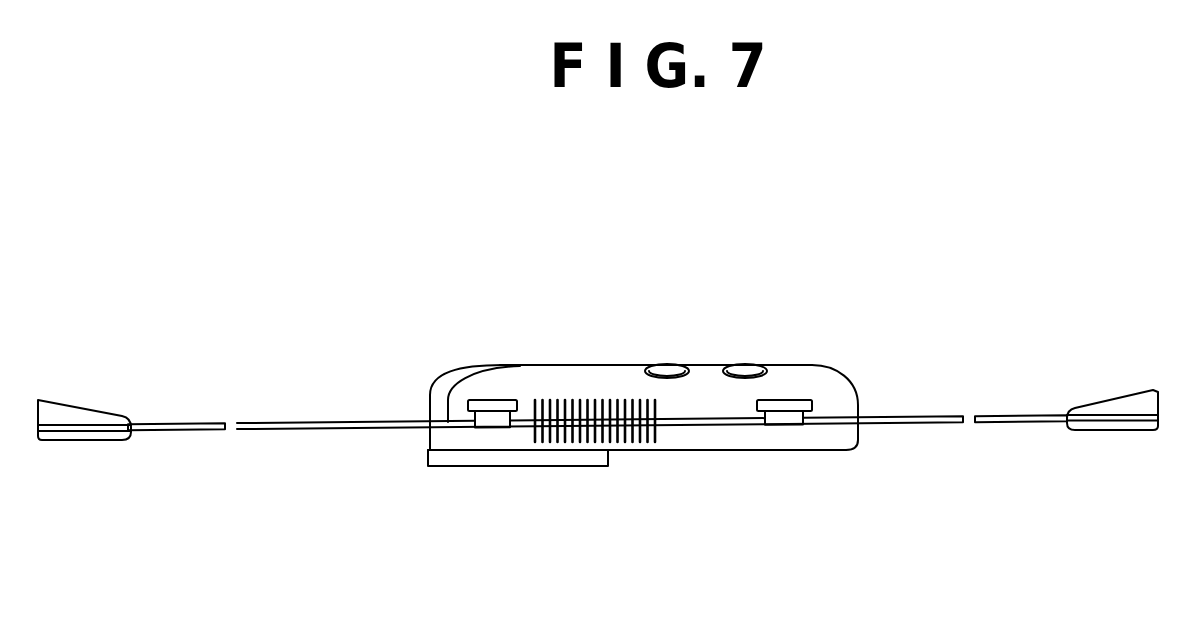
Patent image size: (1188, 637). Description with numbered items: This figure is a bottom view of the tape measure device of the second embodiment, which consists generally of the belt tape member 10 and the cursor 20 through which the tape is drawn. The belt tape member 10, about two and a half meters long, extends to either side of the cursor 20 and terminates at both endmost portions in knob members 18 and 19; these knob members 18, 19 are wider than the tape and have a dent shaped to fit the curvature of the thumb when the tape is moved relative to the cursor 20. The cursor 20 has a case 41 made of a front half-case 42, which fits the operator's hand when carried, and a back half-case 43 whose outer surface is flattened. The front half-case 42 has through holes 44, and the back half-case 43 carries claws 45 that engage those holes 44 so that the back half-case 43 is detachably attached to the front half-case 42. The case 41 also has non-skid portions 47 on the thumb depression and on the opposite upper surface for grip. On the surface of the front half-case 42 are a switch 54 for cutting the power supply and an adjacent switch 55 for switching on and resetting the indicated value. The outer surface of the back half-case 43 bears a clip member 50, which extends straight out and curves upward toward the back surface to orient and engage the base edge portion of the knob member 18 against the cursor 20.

The belt tape member 10 is at (278, 423).
The knob member 18 is at (70, 413).
The knob member 19 is at (1135, 407).
The cursor 20 is at (684, 419).
The case 41 is at (846, 449).
The front half-case 42 is at (822, 378).
The back half-case 43 is at (822, 443).
The through hole 44 is at (500, 400).
The claw 45 is at (494, 429).
The non-skid portion 47 is at (585, 400).
The clip member 50 is at (447, 467).
The switch 54 is at (663, 367).
The switch 55 is at (748, 367).